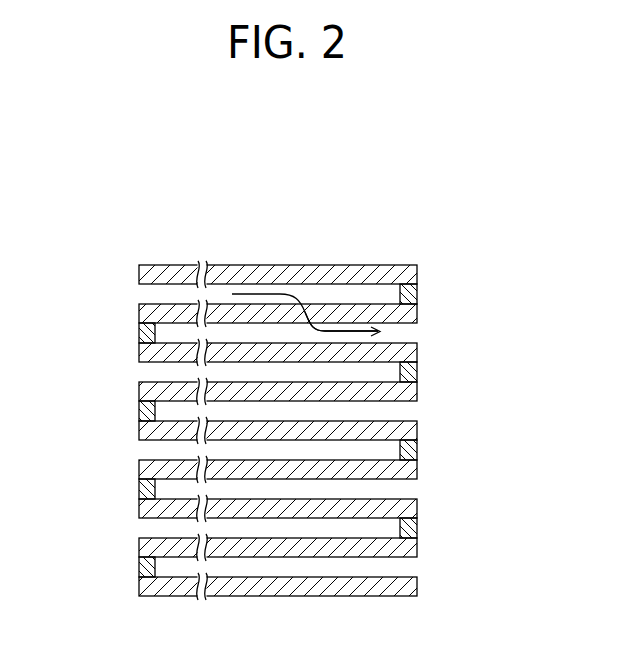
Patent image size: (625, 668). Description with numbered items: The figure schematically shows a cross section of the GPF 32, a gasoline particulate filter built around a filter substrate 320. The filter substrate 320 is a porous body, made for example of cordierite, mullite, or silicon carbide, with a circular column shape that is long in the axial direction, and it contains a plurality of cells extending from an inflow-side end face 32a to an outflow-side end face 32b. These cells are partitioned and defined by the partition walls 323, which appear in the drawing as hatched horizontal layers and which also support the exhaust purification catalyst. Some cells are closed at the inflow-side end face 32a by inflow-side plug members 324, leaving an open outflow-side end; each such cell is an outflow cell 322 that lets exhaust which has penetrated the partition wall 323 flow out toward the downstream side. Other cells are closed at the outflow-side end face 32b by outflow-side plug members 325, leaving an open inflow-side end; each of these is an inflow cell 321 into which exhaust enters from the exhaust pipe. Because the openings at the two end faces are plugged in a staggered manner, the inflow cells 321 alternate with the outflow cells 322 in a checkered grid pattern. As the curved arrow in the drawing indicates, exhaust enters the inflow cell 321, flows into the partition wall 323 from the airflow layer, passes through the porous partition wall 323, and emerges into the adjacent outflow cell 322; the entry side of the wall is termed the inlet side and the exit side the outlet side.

The GPF 32 is at (274, 170).
The filter substrate 320 is at (306, 220).
The inflow cell 321 is at (136, 291).
The outflow cell 322 is at (419, 332).
The partition wall 323 is at (347, 264).
The inflow-side plug member 324 is at (139, 331).
The outflow-side plug member 325 is at (417, 292).
The inflow-side end face 32a is at (126, 358).
The outflow-side end face 32b is at (430, 302).